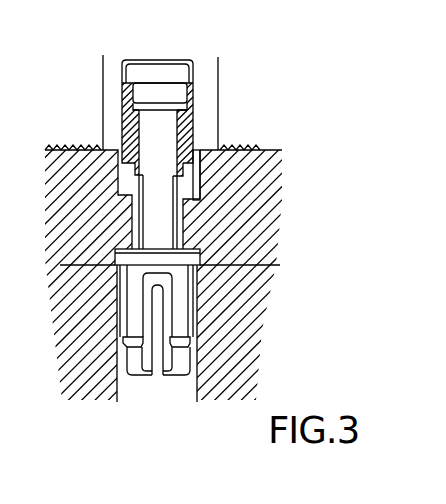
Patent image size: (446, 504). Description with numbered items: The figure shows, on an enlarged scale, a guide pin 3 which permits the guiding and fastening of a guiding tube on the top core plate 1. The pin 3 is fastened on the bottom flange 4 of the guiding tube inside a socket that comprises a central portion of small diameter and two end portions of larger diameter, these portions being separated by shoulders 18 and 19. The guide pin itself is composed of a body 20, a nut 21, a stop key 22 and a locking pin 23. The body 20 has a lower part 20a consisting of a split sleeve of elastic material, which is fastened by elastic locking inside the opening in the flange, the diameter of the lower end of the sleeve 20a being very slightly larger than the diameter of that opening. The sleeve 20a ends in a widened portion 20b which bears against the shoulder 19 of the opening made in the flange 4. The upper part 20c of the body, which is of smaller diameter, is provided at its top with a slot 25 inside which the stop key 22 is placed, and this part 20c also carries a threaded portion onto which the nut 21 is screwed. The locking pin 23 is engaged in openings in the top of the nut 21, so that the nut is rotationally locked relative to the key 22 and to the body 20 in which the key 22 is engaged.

The top core plate 1 is at (225, 358).
The guide pin 3 is at (178, 218).
The bottom flange 4 is at (252, 190).
The shoulder 18 is at (198, 190).
The shoulder 19 is at (196, 241).
The body 20 is at (158, 237).
The lower part 20a is at (130, 308).
The widened portion 20b is at (190, 260).
The upper part 20c is at (158, 168).
The nut 21 is at (190, 137).
The stop key 22 is at (143, 93).
The locking pin 23 is at (158, 72).
The slot 25 is at (170, 107).